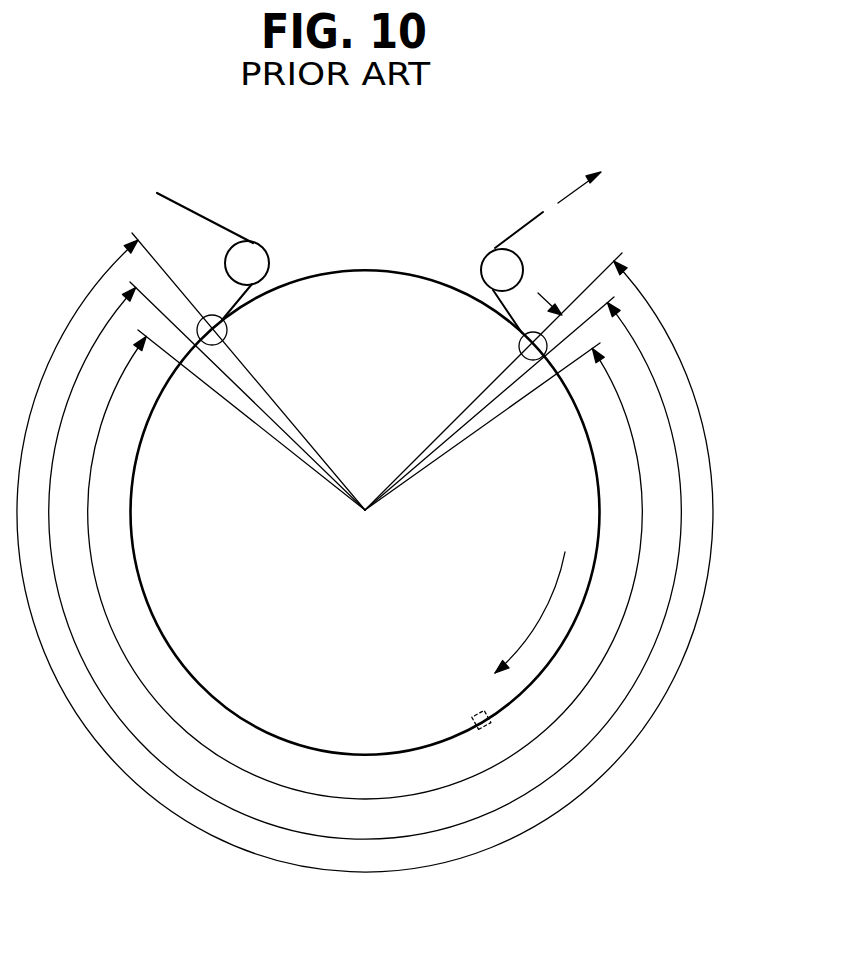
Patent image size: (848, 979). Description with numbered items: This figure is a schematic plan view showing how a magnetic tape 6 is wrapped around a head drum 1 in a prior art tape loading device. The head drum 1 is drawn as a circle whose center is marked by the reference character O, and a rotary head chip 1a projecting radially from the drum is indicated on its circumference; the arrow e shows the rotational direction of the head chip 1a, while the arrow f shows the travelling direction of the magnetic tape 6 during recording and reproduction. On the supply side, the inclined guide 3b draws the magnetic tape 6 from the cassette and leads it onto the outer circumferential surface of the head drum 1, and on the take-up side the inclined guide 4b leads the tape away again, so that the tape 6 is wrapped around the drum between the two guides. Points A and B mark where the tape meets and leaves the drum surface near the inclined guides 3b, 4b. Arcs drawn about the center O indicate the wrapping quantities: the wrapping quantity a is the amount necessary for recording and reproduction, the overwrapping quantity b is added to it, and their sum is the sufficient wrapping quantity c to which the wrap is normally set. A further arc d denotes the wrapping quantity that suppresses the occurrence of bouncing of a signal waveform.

The head drum 1 is at (362, 278).
The head chip 1a is at (468, 707).
The magnetic tape 6 is at (213, 222).
The inclined guide 3b is at (252, 260).
The inclined guide 4b is at (493, 262).
The thread contact point A is at (225, 333).
The thread release point B is at (518, 347).
The center of the head drum O is at (376, 386).
The wrapping quantity necessary for recording and reproduction a is at (533, 737).
The overwrapping quantity b is at (574, 322).
The sufficient wrapping quantity c is at (678, 673).
The wrapping quantity suppressing bouncing d is at (610, 720).
The rotational direction of head chip e is at (555, 585).
The travelling direction of magnetic tape f is at (578, 187).